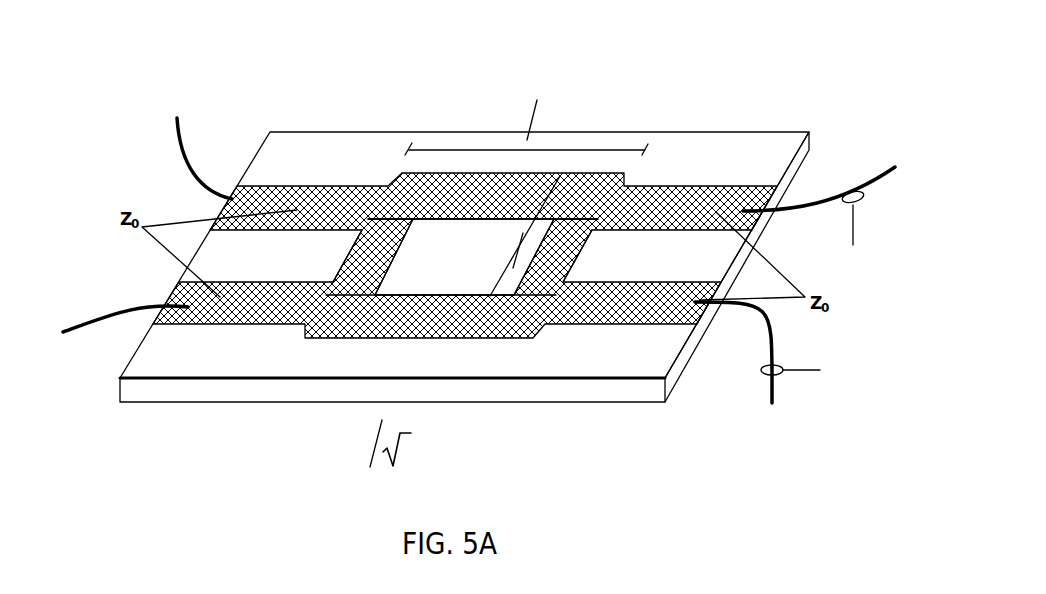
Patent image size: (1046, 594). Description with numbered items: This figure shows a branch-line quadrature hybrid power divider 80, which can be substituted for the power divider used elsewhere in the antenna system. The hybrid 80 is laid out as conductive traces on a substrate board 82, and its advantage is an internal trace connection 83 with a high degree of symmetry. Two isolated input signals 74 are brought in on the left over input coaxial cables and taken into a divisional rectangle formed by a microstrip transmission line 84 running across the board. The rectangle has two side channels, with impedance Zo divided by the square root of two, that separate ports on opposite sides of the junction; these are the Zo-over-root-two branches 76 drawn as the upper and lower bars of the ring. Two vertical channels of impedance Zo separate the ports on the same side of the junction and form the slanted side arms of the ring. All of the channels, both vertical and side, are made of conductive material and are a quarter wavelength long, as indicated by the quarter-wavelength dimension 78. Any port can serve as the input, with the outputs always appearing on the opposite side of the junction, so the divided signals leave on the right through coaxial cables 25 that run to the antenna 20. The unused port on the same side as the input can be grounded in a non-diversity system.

The antenna 20 is at (892, 158).
The coaxial cable 25 is at (878, 190).
The isolated input signals 74 is at (177, 143).
The Z0/sqrt2 impedance branch line 76 is at (492, 200).
The λ/4 channel length 78 is at (505, 232).
The branch-line quadrature hybrid power divider 80 is at (438, 317).
The dielectric substrate 82 is at (168, 368).
The internal trace connection 83 is at (377, 217).
The microstrip transmission line 84 is at (260, 320).